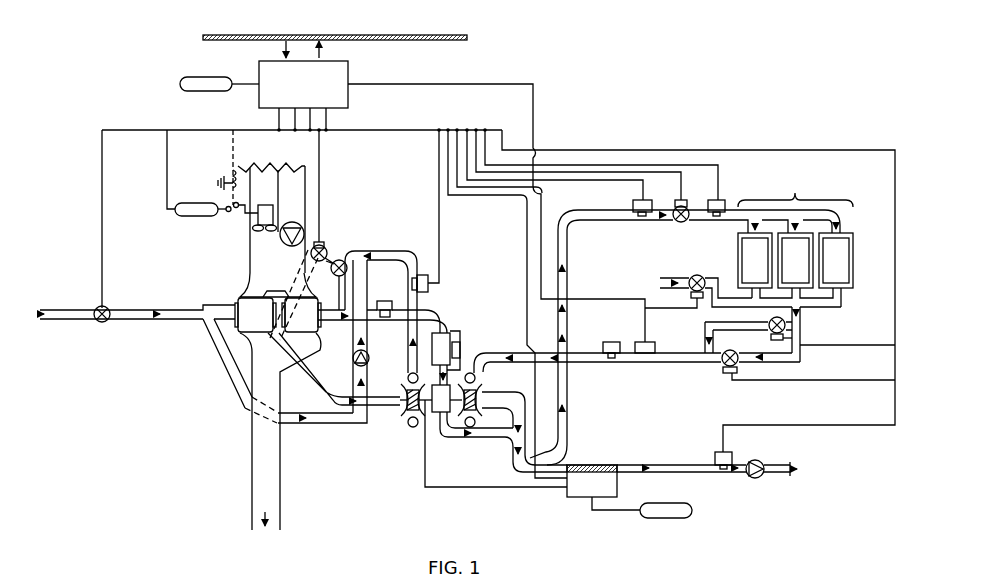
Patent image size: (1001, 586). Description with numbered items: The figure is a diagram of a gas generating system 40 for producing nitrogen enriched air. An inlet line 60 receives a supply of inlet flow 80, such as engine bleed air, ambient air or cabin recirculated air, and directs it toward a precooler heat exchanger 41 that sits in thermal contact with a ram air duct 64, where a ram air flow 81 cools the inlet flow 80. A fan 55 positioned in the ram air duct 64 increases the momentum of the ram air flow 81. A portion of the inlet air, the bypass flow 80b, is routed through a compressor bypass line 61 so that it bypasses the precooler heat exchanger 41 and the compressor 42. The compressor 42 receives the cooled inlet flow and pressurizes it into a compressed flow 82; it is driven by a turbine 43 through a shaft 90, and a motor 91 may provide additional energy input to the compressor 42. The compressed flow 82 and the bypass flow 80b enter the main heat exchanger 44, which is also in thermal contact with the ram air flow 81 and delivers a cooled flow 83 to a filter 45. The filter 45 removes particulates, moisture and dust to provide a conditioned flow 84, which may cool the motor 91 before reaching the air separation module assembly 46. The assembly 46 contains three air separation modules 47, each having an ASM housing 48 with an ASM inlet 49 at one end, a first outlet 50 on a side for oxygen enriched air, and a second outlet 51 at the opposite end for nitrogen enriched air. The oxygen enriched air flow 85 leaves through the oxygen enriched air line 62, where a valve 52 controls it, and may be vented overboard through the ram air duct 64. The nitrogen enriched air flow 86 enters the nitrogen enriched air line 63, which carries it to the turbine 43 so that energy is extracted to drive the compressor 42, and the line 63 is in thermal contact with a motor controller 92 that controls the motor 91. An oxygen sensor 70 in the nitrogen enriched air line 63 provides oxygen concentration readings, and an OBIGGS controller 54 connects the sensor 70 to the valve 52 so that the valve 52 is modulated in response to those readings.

The gas generating system 40 is at (86, 78).
The precooler heat exchanger 41 is at (267, 325).
The compressor 42 is at (404, 408).
The turbine 43 is at (480, 410).
The main heat exchanger 44 is at (313, 325).
The filter 45 is at (440, 331).
The air separation module assembly 46 is at (795, 189).
The air separation module 47 is at (766, 269).
The ASM housing 48 is at (855, 248).
The ASM inlet 49 is at (846, 224).
The first outlet 50 is at (840, 279).
The second outlet 51 is at (840, 300).
The valve 52 is at (691, 275).
The OBIGGS controller 54 is at (316, 94).
The fan 55 is at (252, 229).
The inlet line 60 is at (95, 308).
The compressor bypass line 61 is at (232, 372).
The oxygen enriched air line 62 is at (710, 278).
The nitrogen enriched air line 63 is at (802, 356).
The ram air duct 64 is at (266, 181).
The oxygen sensor 70 is at (645, 356).
The inlet flow 80 is at (42, 310).
The bypass flow 80b is at (310, 425).
The ram air flow 81 is at (279, 164).
The compressed flow 82 is at (410, 346).
The cooled flow 83 is at (339, 322).
The conditioned flow 84 is at (433, 372).
The oxygen enriched air flow 85 is at (670, 282).
The nitrogen enriched air flow 86 is at (800, 313).
The shaft 90 is at (413, 425).
The motor 91 is at (432, 412).
The motor controller 92 is at (603, 495).